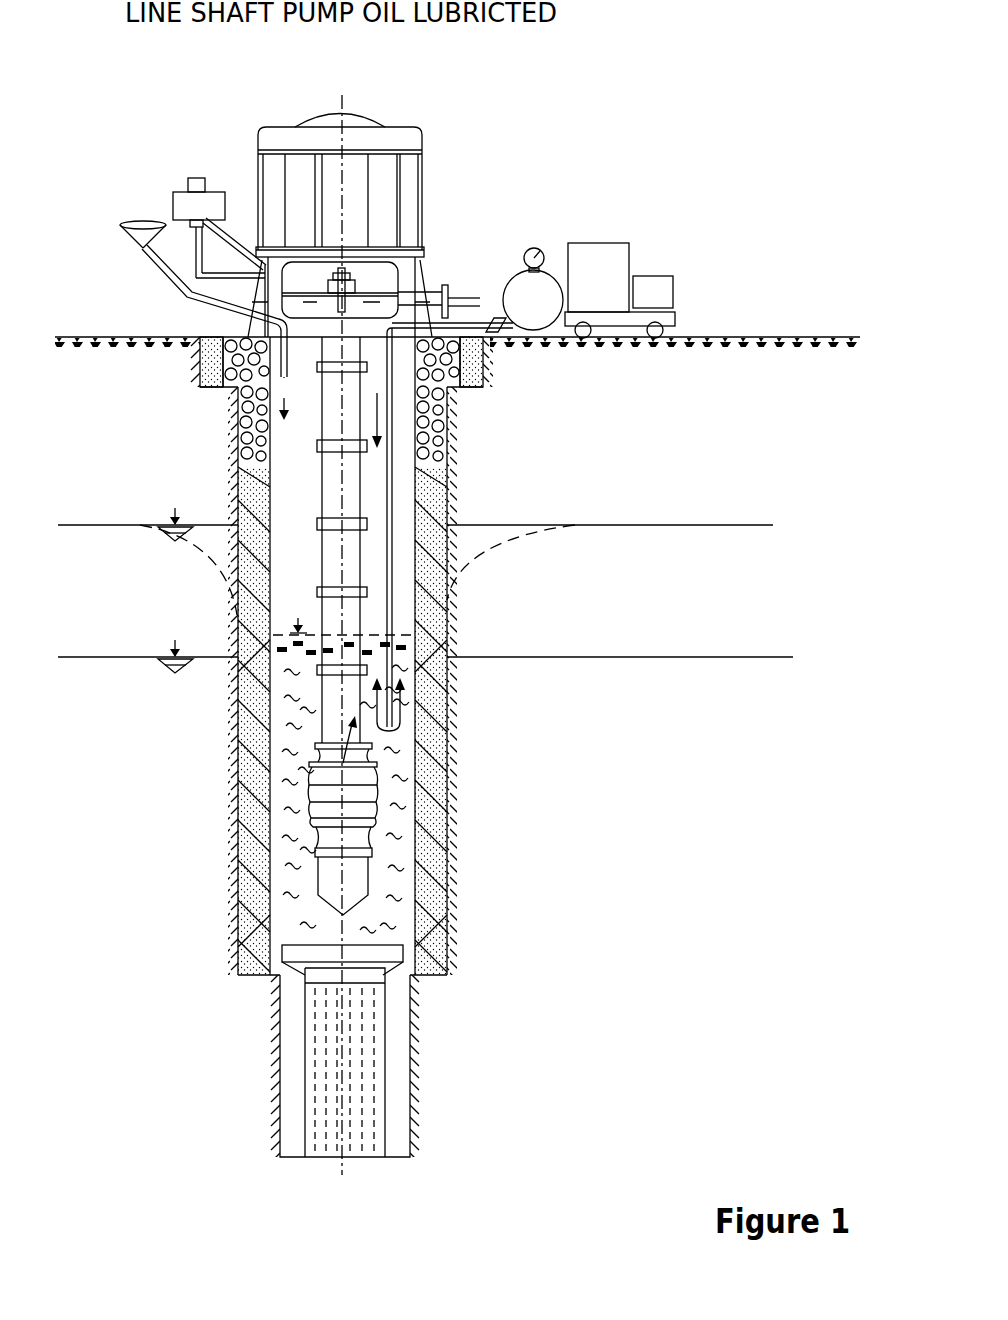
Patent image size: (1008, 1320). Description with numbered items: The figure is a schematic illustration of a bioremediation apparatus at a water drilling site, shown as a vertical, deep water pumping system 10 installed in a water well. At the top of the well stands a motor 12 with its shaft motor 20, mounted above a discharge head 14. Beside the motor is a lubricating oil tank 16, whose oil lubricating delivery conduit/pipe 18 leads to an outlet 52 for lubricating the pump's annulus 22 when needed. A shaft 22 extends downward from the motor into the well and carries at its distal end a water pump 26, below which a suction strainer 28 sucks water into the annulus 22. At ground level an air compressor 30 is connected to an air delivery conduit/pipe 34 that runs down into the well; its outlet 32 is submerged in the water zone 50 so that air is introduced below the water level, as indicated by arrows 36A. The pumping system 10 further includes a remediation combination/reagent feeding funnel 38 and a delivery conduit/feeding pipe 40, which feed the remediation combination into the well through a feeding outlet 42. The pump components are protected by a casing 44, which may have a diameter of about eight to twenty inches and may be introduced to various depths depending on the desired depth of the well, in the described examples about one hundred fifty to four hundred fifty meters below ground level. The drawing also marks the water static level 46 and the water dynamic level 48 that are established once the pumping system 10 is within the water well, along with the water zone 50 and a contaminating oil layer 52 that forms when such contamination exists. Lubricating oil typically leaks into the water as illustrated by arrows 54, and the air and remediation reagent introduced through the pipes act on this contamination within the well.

The vertical deep water pumping system 10 is at (522, 113).
The motor 12 is at (300, 188).
The discharge head 14 is at (388, 272).
The lubricating oil tank 16 is at (213, 205).
The oil lubricating delivery conduit/pipe 18 is at (195, 258).
The shaft motor 20 is at (340, 268).
The shaft 22 is at (300, 482).
The water pump 26 is at (318, 810).
The suction strainer 28 is at (328, 880).
The air compressor 30 is at (605, 273).
The outlet 32 is at (437, 768).
The air delivery conduit/pipe 34 is at (393, 497).
The arrows 36A is at (398, 716).
The remediation combination/reagent feeding funnel 38 is at (143, 237).
The delivery conduit/feeding pipe 40 is at (188, 297).
The feeding outlet 42 is at (285, 372).
The casing 44 is at (238, 782).
The water static level 46 is at (760, 525).
The water dynamic level 48 is at (783, 657).
The water zone 50 is at (400, 888).
The outlet / contaminating oil layer 52 is at (275, 641).
The arrows 54 is at (315, 760).